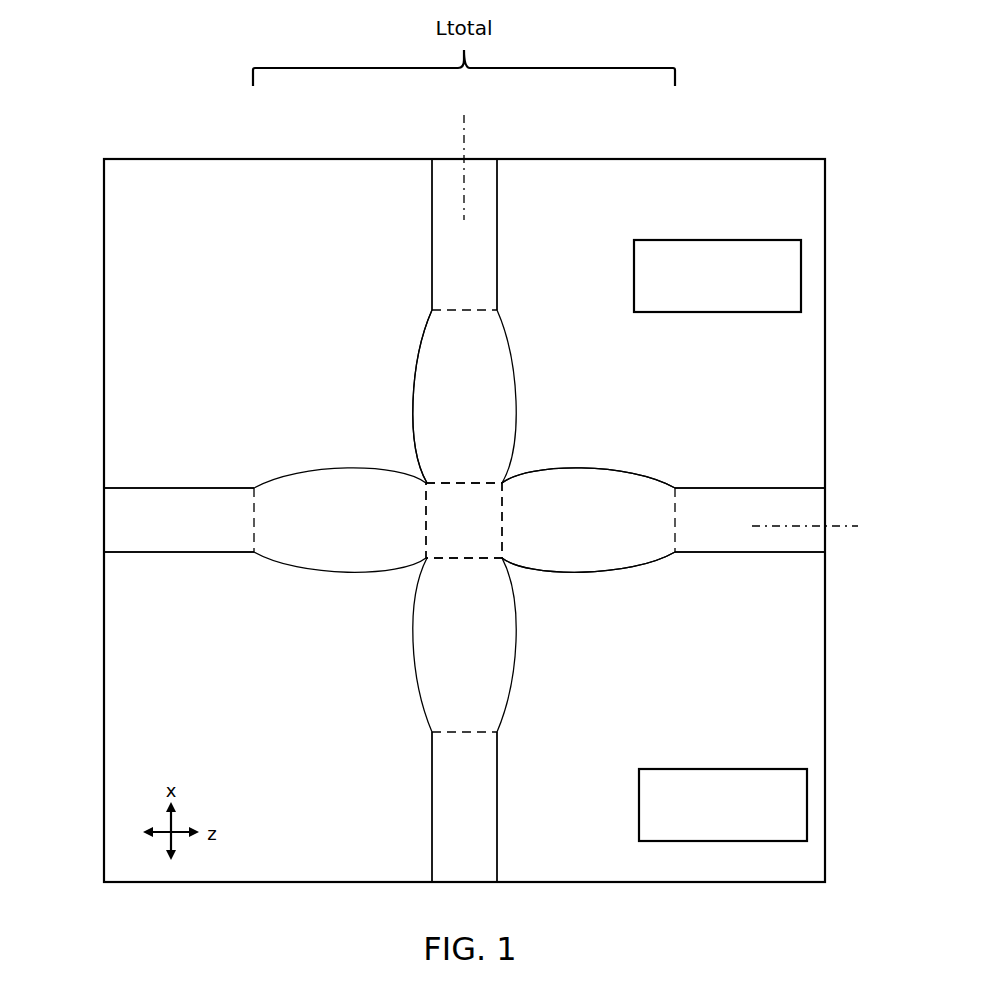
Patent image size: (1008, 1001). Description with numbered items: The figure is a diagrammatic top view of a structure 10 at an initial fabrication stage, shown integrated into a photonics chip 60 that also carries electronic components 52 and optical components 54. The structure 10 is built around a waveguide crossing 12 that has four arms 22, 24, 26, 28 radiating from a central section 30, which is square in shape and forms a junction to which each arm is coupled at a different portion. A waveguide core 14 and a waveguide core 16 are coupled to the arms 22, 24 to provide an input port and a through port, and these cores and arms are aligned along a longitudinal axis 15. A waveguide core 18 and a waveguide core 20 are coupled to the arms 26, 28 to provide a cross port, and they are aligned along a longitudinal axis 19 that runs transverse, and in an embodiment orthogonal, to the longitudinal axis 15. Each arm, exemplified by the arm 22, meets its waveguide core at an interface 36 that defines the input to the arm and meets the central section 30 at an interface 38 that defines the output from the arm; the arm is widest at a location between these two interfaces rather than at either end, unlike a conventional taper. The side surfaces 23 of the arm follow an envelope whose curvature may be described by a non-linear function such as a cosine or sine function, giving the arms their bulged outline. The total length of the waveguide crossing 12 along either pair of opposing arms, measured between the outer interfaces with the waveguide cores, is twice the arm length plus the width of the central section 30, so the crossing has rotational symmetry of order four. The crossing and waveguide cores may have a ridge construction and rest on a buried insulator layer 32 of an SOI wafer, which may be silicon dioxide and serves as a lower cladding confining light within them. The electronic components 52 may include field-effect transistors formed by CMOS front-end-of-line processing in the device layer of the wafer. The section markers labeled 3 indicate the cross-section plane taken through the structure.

The photonics chip 60 is at (124, 142).
The structure 10 is at (220, 250).
The waveguide crossing 12 is at (524, 390).
The waveguide core 14 is at (158, 530).
The longitudinal axis 15 is at (845, 530).
The waveguide core 16 is at (743, 535).
The waveguide core 18 is at (445, 813).
The longitudinal axis 19 is at (463, 134).
The waveguide core 20 is at (440, 221).
The arm 22 is at (302, 543).
The side surfaces 23 is at (603, 469).
The arm 24 is at (640, 538).
The arm 26 is at (437, 671).
The arm 28 is at (433, 381).
The central section 30 is at (462, 508).
The buried insulator layer 32 is at (177, 709).
The interface 36 is at (460, 312).
The interface 38 is at (453, 482).
The electronic components 52 is at (638, 794).
The optical components 54 is at (633, 281).
The section line for FIG. 3 is at (338, 642).